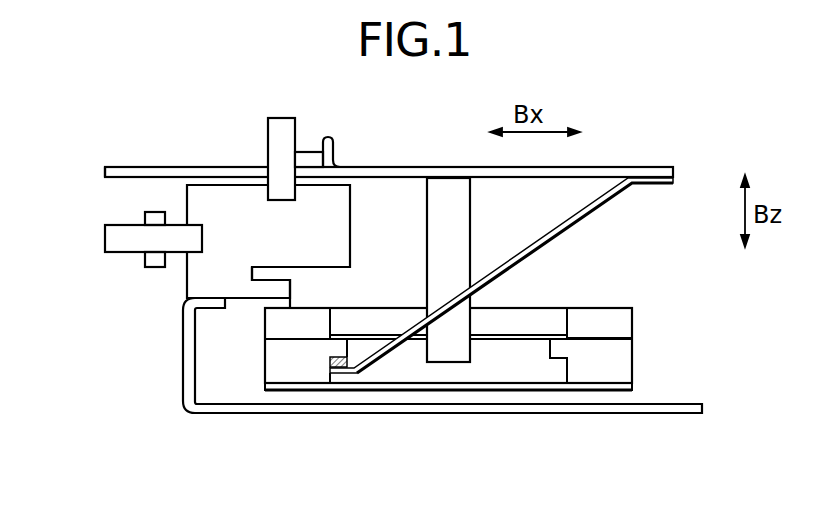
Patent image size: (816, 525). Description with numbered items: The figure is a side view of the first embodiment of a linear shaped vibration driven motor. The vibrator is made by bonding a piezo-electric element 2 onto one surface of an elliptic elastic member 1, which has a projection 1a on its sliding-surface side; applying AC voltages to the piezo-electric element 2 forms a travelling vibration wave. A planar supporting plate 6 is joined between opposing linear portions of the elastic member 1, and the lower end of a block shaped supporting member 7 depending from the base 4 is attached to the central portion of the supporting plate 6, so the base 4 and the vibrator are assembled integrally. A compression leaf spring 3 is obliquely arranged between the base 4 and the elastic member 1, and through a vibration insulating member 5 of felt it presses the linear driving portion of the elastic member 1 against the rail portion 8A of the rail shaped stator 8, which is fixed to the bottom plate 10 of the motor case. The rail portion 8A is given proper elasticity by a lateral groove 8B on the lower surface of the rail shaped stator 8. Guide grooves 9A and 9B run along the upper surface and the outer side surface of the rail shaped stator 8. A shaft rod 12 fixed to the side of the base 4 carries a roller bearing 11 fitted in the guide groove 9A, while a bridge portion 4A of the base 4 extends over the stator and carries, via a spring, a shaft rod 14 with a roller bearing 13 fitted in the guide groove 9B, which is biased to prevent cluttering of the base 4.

The elastic member 1 is at (627, 370).
The projection 1a is at (627, 325).
The piezo-electric element 2 is at (623, 395).
The compression leaf spring 3 is at (593, 200).
The base 4 is at (392, 167).
The bridge portion 4A is at (130, 167).
The vibration insulating member 5 is at (342, 373).
The supporting plate 6 is at (493, 338).
The supporting member 7 is at (472, 198).
The rail shaped stator 8 is at (213, 192).
The rail portion 8A is at (285, 298).
The lateral groove 8B is at (293, 275).
The guide groove 9A is at (275, 200).
The guide groove 9B is at (202, 242).
The bottom plate 10 is at (682, 413).
The roller bearing 11 is at (285, 118).
The shaft rod 12 is at (308, 150).
The roller bearing 13 is at (110, 242).
The shaft rod 14 is at (153, 212).